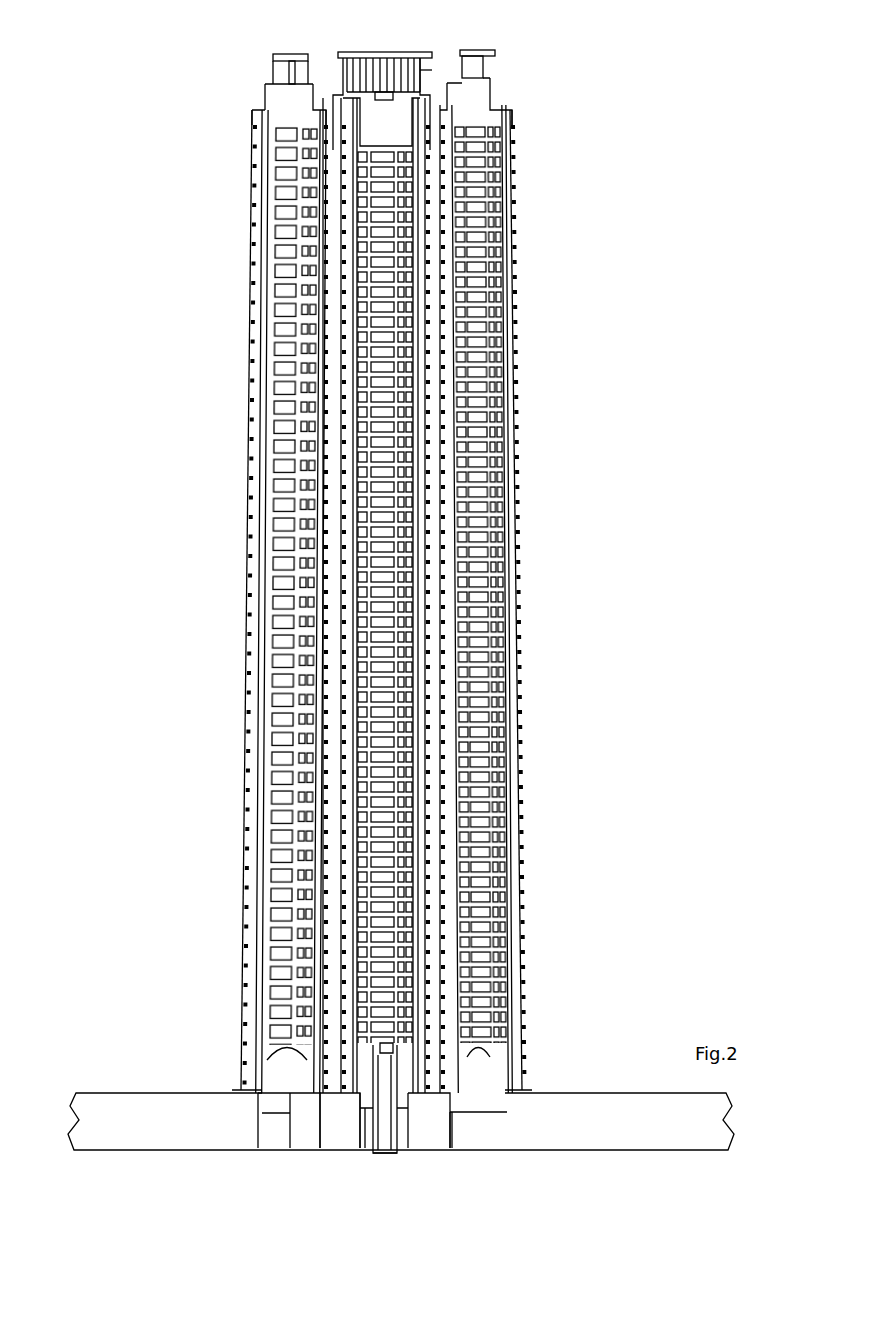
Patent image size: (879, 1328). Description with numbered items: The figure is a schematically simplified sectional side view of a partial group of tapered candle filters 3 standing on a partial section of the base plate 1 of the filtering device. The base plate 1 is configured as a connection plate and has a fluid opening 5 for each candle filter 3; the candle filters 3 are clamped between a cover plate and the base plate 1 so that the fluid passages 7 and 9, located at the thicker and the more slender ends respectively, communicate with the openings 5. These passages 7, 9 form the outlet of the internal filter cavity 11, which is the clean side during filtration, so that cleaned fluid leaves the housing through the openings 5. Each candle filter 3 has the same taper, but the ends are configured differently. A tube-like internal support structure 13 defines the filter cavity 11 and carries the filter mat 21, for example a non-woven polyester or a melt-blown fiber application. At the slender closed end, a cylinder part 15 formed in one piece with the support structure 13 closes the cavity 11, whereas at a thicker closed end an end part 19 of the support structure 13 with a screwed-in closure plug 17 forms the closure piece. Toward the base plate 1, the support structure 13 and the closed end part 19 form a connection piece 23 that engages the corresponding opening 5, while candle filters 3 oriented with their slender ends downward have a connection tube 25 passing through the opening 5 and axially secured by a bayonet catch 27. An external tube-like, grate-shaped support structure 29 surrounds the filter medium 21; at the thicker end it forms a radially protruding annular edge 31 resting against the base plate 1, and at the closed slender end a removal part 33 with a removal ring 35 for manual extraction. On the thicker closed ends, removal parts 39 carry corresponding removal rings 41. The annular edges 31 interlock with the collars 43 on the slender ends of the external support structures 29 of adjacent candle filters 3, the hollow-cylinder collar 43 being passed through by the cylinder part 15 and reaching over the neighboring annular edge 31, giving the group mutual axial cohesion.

The base plate 1 is at (105, 1118).
The candle filter 3 is at (351, 40).
The fluid opening 5 is at (262, 1135).
The fluid passage 7 is at (262, 1095).
The fluid passage 9 is at (385, 1072).
The internal filter cavity 11 is at (390, 1043).
The internal support structure 13 is at (400, 907).
The cylinder part 15 is at (290, 104).
The closure plug 17 is at (378, 115).
The end part 19 is at (350, 120).
The filter mat 21 is at (515, 385).
The connection piece 23 is at (480, 1187).
The connection tube 25 is at (375, 1152).
The bayonet catch 27 is at (365, 1150).
The external support structure 29 is at (430, 202).
The annular edge 31 is at (240, 1090).
The removal part 33 is at (284, 80).
The removal ring 35 is at (287, 56).
The removal part 39 is at (434, 79).
The removal ring 41 is at (385, 60).
The collar 43 is at (312, 118).